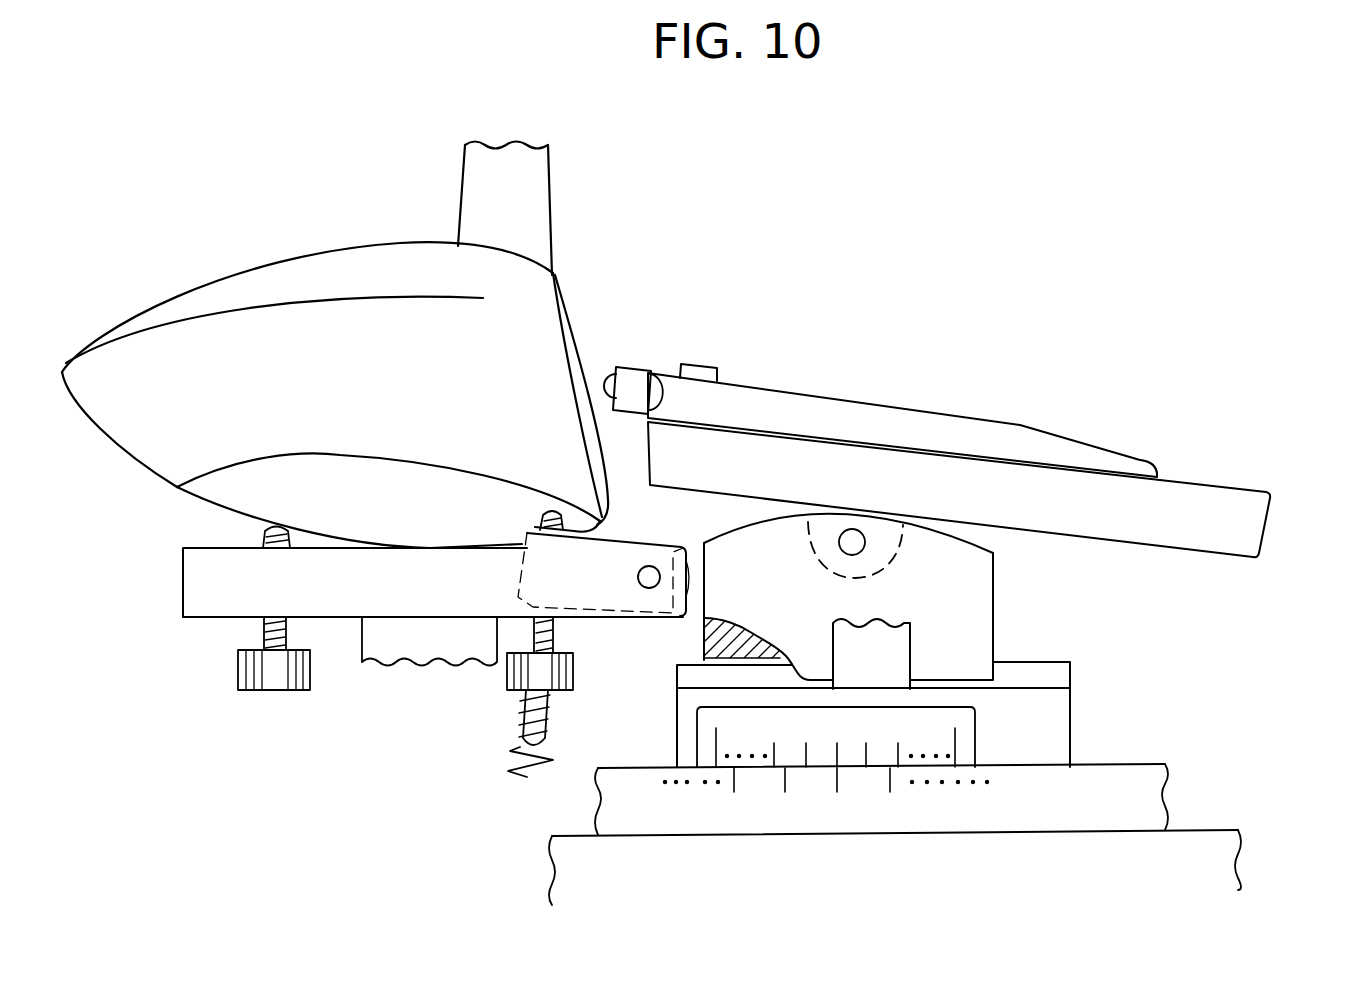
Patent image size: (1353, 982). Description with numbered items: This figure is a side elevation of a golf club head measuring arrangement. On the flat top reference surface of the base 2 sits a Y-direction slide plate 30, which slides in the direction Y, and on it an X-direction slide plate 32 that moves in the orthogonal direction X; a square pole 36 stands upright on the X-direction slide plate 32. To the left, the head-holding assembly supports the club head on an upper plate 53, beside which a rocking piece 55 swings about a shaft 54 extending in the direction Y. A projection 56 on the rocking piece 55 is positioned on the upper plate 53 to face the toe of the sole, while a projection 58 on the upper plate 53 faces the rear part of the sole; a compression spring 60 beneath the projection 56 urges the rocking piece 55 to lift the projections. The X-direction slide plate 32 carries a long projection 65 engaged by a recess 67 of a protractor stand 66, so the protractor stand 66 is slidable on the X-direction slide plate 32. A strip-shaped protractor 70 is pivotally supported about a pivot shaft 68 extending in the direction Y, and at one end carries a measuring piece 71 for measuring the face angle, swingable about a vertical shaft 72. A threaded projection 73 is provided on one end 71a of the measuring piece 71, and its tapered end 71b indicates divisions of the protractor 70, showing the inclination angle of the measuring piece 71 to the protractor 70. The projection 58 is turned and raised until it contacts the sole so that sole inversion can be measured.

The base 2 is at (1206, 845).
The Y-direction slide plate 30 is at (1140, 775).
The X-direction slide plate 32 is at (1060, 708).
The square pole 36 is at (898, 643).
The upper plate 53 is at (200, 596).
The shaft 54 is at (649, 588).
The rocking piece 55 is at (592, 537).
The projection 56 is at (540, 514).
The projection 58 is at (260, 532).
The compression spring 60 is at (518, 757).
The long projection 65 is at (1055, 665).
The protractor stand 66 is at (994, 580).
The recess 67 is at (731, 632).
The pivot shaft 68 is at (865, 546).
The protractor 70 is at (1258, 505).
The measuring piece 71 is at (838, 413).
The one end of the measuring piece 71a is at (633, 378).
The tapered end 71b is at (1140, 464).
The vertical shaft 72 is at (700, 368).
The threaded projection 73 is at (610, 383).